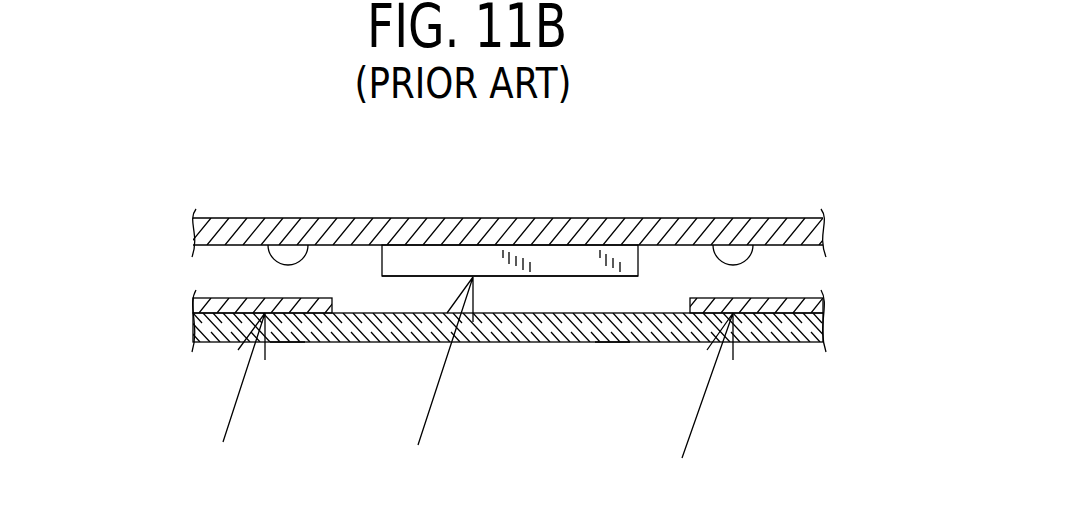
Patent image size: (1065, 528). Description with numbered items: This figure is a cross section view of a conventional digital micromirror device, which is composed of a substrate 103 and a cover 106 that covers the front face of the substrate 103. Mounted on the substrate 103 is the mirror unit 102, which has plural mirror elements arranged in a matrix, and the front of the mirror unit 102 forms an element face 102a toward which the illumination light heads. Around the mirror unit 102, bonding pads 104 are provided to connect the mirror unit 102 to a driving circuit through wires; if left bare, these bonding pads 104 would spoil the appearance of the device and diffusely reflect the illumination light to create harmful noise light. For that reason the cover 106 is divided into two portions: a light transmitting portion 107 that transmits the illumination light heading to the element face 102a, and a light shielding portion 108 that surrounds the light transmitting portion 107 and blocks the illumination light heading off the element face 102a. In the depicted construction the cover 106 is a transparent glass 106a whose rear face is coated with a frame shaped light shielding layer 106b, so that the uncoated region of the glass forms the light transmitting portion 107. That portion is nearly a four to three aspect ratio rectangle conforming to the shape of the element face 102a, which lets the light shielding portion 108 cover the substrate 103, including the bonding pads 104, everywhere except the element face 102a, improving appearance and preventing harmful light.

The mirror unit 102 is at (566, 242).
The element face 102a is at (441, 277).
The substrate 103 is at (318, 217).
The bonding pads 104 is at (283, 257).
The cover 106 is at (465, 369).
The transparent glass 106a is at (193, 333).
The light shielding layer 106b is at (193, 299).
The light transmitting portion 107 is at (612, 343).
The light shielding portion 108 is at (289, 343).